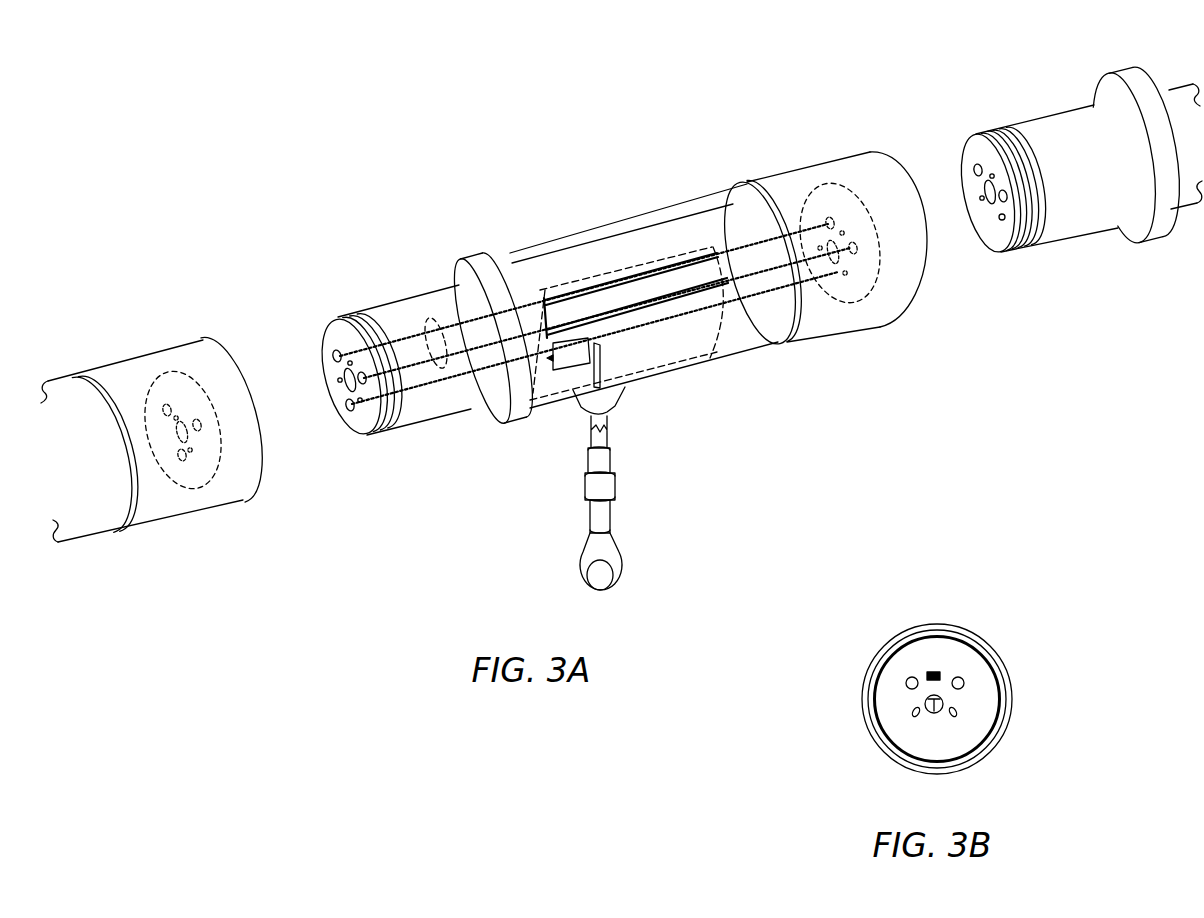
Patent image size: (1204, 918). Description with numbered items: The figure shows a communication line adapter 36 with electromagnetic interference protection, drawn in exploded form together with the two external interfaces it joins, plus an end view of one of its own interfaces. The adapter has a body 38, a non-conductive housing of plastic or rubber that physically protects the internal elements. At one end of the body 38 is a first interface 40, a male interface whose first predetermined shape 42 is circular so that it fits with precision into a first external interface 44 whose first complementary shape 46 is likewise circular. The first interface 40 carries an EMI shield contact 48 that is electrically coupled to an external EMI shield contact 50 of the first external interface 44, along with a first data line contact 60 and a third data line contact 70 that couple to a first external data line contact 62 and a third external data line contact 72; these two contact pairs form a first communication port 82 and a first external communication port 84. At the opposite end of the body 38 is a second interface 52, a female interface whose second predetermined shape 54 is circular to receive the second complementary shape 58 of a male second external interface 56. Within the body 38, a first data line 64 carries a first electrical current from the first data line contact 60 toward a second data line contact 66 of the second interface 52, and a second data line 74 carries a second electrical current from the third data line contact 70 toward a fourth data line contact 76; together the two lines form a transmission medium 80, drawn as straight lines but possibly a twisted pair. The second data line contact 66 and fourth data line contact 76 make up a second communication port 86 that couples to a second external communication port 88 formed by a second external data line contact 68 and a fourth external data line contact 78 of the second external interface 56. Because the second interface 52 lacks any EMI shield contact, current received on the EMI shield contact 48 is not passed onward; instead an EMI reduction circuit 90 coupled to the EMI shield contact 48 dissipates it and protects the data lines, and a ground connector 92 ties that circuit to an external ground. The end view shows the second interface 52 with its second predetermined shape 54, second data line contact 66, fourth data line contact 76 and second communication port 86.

In FIG. 3A, the communication line adapter 36 is at (433, 157).
In FIG. 3A, the body 38 is at (548, 243).
In FIG. 3A, the first interface 40 is at (311, 306).
In FIG. 3A, the first predetermined shape 42 is at (386, 303).
In FIG. 3A, the first external interface 44 is at (116, 331).
In FIG. 3A, the first complementary shape 46 is at (197, 338).
In FIG. 3A, the EMI shield contact 48 is at (394, 419).
In FIG. 3A, the external EMI shield contact 50 is at (181, 458).
In FIG. 3A, the second interface 52 is at (874, 130).
In FIG. 3B, the second interface 52 is at (1012, 553).
In FIG. 3A, the second predetermined shape 54 is at (868, 167).
In FIG. 3B, the second predetermined shape 54 is at (999, 691).
In FIG. 3A, the second external interface 56 is at (1048, 89).
In FIG. 3A, the second complementary shape 58 is at (1029, 117).
In FIG. 3A, the first data line contact 60 is at (335, 358).
In FIG. 3A, the first external data line contact 62 is at (173, 409).
In FIG. 3A, the first data line 64 is at (638, 273).
In FIG. 3A, the second data line contact 66 is at (836, 224).
In FIG. 3B, the second data line contact 66 is at (963, 683).
In FIG. 3A, the second external data line contact 68 is at (975, 170).
In FIG. 3A, the third data line contact 70 is at (348, 381).
In FIG. 3A, the third external data line contact 72 is at (202, 425).
In FIG. 3A, the second data line 74 is at (682, 293).
In FIG. 3A, the fourth data line contact 76 is at (858, 250).
In FIG. 3B, the fourth data line contact 76 is at (905, 681).
In FIG. 3A, the fourth external data line contact 78 is at (1002, 198).
In FIG. 3A, the transmission medium 80 is at (432, 318).
In FIG. 3A, the first communication port 82 is at (311, 334).
In FIG. 3A, the first external communication port 84 is at (236, 477).
In FIG. 3A, the second communication port 86 is at (893, 259).
In FIG. 3B, the second communication port 86 is at (905, 702).
In FIG. 3A, the second external communication port 88 is at (988, 268).
In FIG. 3A, the EMI reduction circuit 90 is at (560, 357).
In FIG. 3A, the ground connector 92 is at (622, 559).